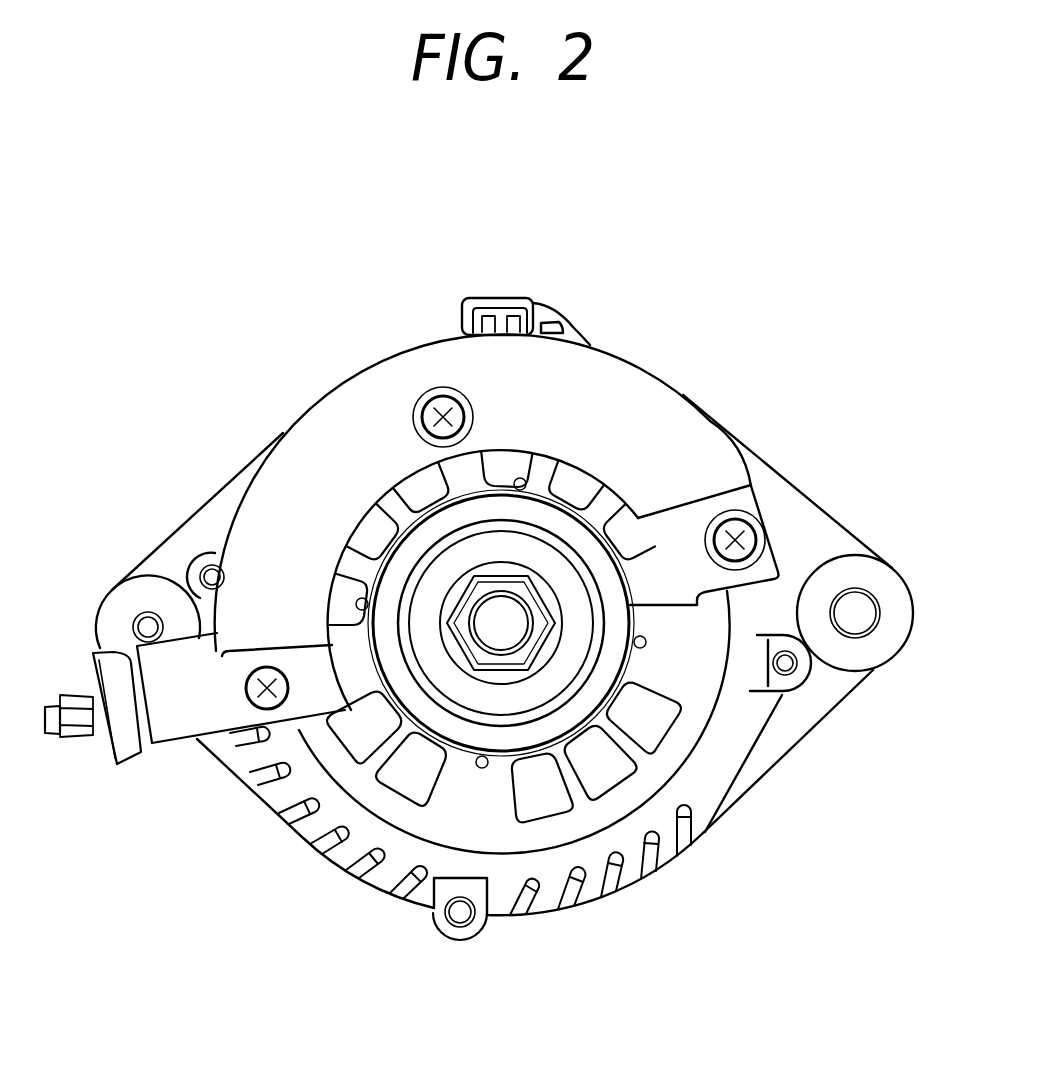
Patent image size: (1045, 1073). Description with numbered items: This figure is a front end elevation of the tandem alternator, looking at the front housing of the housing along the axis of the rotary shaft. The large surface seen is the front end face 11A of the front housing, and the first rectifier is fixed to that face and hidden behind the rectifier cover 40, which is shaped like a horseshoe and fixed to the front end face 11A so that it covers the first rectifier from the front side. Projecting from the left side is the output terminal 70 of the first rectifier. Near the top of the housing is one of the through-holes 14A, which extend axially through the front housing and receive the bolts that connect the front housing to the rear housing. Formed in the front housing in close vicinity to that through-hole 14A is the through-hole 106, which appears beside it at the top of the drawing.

The through-hole 106 is at (493, 303).
The through-hole 14A is at (540, 327).
The rectifier cover 40 is at (637, 410).
The output terminal 70 is at (93, 712).
The front end face 11A is at (718, 751).